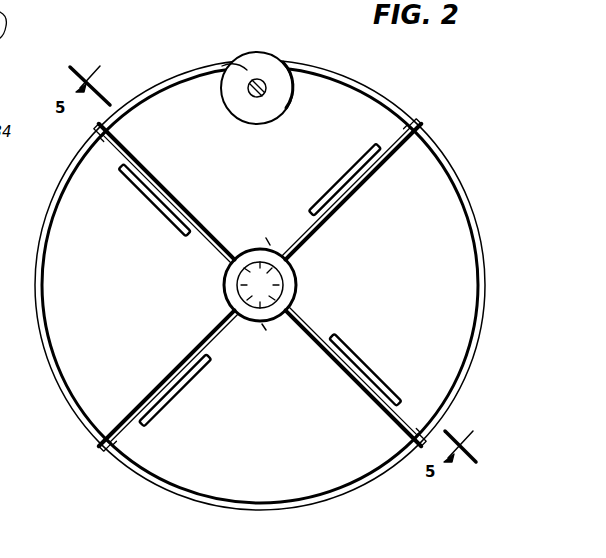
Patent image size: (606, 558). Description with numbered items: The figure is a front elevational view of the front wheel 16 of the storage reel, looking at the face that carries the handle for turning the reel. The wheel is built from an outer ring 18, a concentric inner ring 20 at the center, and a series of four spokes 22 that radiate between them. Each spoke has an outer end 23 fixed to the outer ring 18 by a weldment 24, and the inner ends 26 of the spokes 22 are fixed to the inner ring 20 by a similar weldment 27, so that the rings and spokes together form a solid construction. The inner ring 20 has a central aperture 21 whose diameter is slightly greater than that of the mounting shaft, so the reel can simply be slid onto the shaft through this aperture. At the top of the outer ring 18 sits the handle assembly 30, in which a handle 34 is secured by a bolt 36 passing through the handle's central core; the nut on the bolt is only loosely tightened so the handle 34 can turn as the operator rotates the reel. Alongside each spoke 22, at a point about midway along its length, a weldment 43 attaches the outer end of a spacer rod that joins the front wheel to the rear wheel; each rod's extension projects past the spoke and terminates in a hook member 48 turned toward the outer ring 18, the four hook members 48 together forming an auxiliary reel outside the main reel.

The front wheel 16 is at (46, 343).
The outer ring 18 is at (456, 180).
The inner ring 20 is at (226, 278).
The central aperture 21 is at (298, 278).
The spokes 22 is at (182, 192).
The outer end 23 is at (418, 126).
The weldment 24 is at (96, 132).
The inner ends 26 is at (224, 295).
The weldment 27 is at (278, 232).
The handle assembly 30 is at (272, 60).
The handle 34 is at (228, 58).
The bolt 36 is at (258, 98).
The weldment 43 is at (190, 226).
The hook member 48 is at (152, 200).